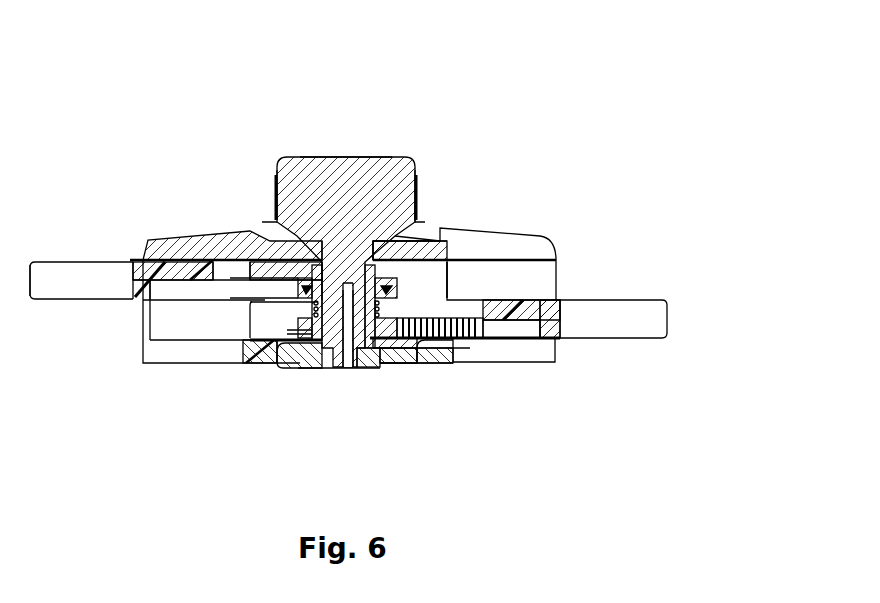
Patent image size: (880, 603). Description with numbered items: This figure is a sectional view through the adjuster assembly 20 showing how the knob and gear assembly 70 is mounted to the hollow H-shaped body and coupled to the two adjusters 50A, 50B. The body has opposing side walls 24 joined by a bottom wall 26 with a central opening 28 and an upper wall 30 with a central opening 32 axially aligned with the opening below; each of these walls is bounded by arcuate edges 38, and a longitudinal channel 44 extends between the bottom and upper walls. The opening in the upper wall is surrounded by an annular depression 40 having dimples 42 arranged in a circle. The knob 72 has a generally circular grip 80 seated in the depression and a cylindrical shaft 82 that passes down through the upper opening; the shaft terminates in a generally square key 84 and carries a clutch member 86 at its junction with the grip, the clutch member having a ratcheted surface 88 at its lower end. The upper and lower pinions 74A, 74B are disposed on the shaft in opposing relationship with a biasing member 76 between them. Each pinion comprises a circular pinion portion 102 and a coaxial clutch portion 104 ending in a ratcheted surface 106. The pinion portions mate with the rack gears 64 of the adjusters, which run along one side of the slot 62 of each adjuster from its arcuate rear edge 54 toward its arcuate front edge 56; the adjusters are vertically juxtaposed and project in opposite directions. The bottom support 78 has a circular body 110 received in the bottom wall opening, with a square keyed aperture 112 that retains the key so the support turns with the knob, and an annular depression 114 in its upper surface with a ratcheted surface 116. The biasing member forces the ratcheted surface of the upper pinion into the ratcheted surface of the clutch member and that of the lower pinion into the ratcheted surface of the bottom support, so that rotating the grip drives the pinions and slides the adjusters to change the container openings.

The adjuster assembly 20 is at (487, 82).
The side wall 24 is at (148, 310).
The bottom wall 26 is at (182, 350).
The central opening 28 is at (277, 353).
The upper wall 30 is at (448, 272).
The central opening 32 is at (418, 222).
The arcuate edge 38 is at (264, 258).
The annular depression 40 is at (420, 246).
The dimple 42 is at (293, 197).
The longitudinal channel 44 is at (178, 325).
The adjuster 50A is at (62, 262).
The adjuster 50B is at (638, 299).
The arcuate rear edge 54 is at (235, 318).
The arcuate front edge 56 is at (53, 297).
The slot 62 is at (220, 270).
The rack gear 64 is at (483, 318).
The knob and gear assembly 70 is at (305, 377).
The knob 72 is at (373, 155).
The upper pinion 74A is at (444, 255).
The lower pinion 74B is at (293, 343).
The biasing member 76 is at (300, 322).
The bottom support 78 is at (325, 373).
The grip 80 is at (353, 197).
The shaft 82 is at (440, 227).
The key 84 is at (355, 355).
The clutch member 86 is at (400, 257).
The ratcheted surface 88 is at (322, 200).
The pinion portion 102 is at (262, 278).
The clutch portion 104 is at (270, 223).
The ratcheted surface 106 is at (275, 200).
The body 110 is at (300, 358).
The keyed aperture 112 is at (360, 362).
The annular depression 114 is at (407, 352).
The ratcheted surface 116 is at (392, 352).